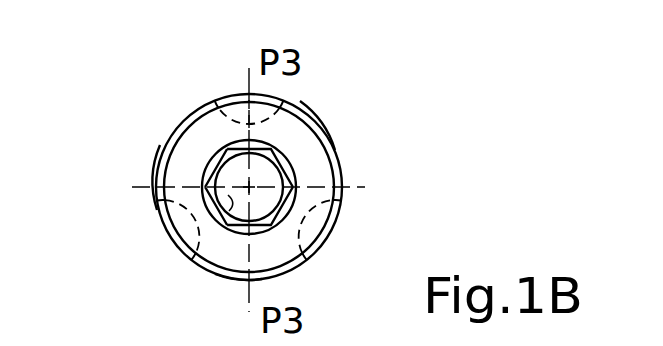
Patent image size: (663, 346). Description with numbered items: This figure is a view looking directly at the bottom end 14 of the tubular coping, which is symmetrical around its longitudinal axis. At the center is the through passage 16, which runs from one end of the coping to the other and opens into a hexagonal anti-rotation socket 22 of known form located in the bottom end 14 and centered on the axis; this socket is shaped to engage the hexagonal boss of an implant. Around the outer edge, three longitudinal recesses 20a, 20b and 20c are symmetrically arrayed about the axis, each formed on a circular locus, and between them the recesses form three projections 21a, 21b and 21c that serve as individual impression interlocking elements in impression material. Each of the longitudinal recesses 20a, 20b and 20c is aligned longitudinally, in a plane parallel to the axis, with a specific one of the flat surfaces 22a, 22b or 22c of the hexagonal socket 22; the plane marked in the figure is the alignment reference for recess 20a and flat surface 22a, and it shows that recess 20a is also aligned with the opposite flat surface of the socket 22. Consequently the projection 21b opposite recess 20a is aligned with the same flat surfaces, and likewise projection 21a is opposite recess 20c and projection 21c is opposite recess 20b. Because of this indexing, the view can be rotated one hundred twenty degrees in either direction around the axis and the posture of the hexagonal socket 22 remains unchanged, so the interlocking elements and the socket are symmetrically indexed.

The bottom end 14 is at (310, 168).
The through passage 16 is at (210, 242).
The longitudinal recess 20a is at (235, 92).
The longitudinal recess 20b is at (183, 218).
The longitudinal recess 20c is at (305, 230).
The projection 21a is at (163, 145).
The projection 21b is at (220, 282).
The projection 21c is at (324, 128).
The hexagonal anti-rotation socket 22 is at (232, 178).
The flat surface 22a is at (264, 146).
The flat surface 22b is at (227, 226).
The flat surface 22c is at (285, 214).